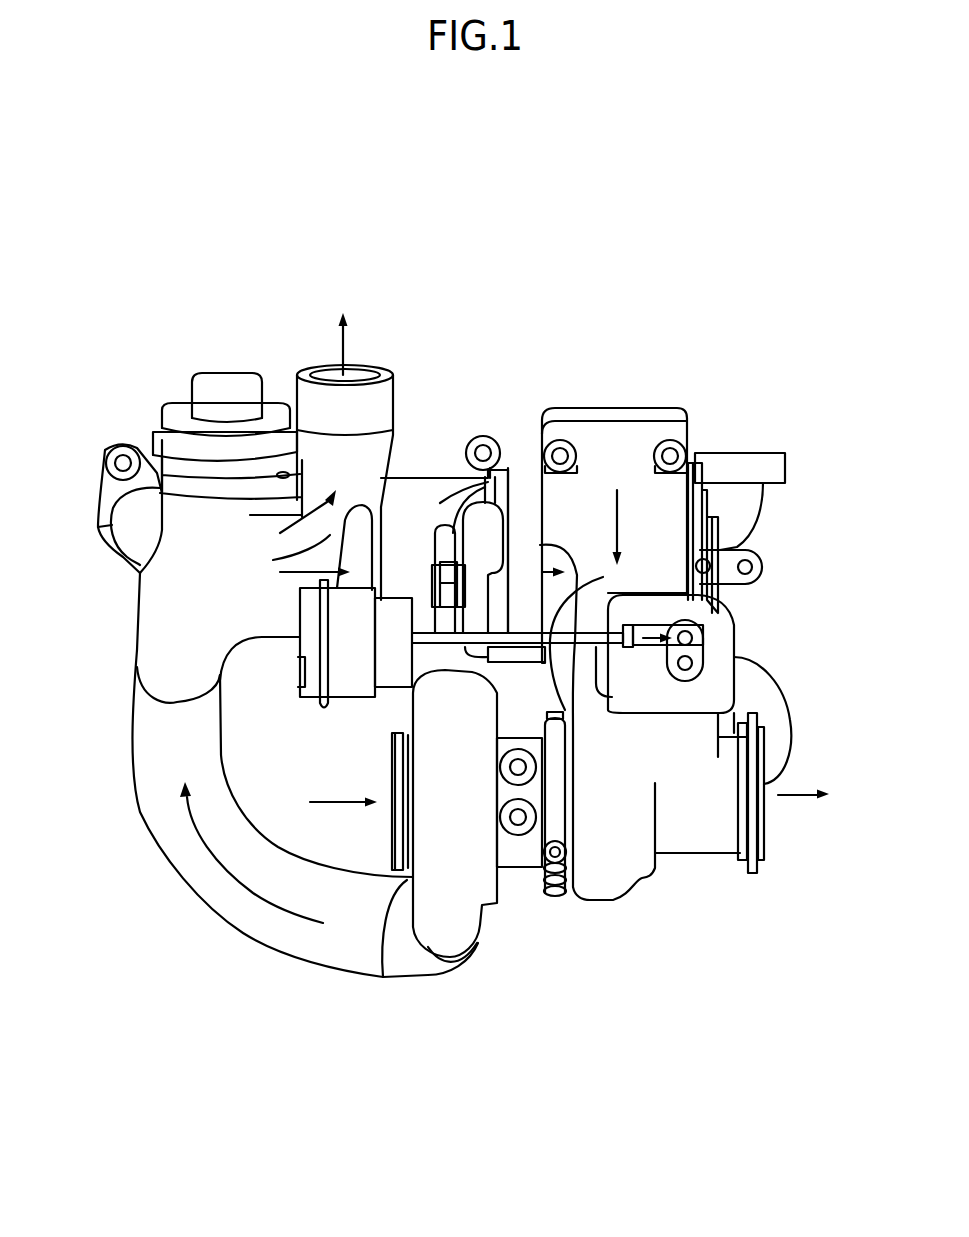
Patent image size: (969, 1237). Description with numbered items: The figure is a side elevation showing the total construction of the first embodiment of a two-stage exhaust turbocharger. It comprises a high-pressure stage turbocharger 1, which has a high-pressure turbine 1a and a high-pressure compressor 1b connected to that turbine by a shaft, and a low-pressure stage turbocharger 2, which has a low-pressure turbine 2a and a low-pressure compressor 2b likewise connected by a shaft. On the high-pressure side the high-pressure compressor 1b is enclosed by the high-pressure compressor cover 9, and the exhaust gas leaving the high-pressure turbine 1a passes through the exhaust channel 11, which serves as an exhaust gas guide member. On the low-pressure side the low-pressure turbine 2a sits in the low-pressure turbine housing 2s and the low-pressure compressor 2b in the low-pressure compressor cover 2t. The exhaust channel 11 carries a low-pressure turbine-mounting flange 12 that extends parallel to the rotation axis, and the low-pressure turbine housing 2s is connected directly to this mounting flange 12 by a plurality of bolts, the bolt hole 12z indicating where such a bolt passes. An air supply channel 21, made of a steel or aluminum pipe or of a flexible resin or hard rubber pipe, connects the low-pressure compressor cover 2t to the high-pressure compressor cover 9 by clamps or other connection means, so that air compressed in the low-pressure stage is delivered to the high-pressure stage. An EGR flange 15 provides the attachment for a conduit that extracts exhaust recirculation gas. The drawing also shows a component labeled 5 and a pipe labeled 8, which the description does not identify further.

The high-pressure stage turbocharger 1 is at (443, 471).
The high-pressure turbine 1a is at (492, 507).
The high-pressure compressor 1b is at (348, 505).
The low-pressure stage turbocharger 2 is at (556, 910).
The low-pressure turbine 2a is at (648, 887).
The low-pressure compressor 2b is at (481, 956).
The low-pressure turbine housing 2s is at (647, 757).
The low-pressure compressor cover 2t is at (442, 932).
The valve unit 5 is at (176, 386).
The air pipe 8 is at (306, 404).
The high-pressure compressor cover 9 is at (148, 618).
The exhaust channel 11 is at (523, 513).
The low-pressure turbine-mounting flange 12 is at (612, 421).
The bolt hole 12z is at (669, 455).
The EGR flange 15 is at (730, 472).
The air supply channel 21 is at (160, 802).